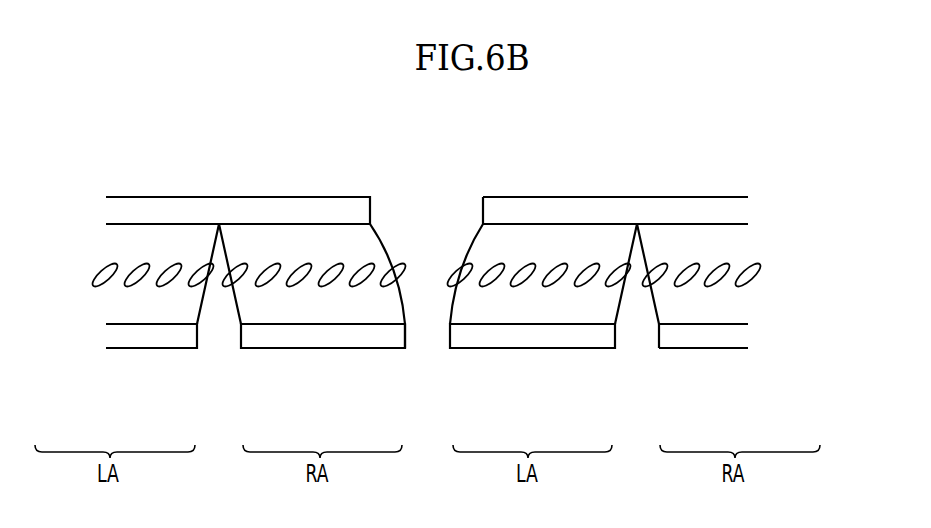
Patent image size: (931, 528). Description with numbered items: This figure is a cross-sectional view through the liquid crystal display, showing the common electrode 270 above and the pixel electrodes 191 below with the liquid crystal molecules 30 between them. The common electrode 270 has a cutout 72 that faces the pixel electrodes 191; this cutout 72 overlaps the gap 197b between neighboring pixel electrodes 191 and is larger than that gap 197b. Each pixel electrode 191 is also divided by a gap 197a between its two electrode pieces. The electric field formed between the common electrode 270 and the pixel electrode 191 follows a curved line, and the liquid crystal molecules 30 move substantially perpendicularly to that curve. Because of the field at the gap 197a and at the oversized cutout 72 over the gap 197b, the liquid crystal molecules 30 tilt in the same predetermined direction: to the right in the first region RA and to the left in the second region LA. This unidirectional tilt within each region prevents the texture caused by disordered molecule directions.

The common electrode 270 is at (302, 208).
The cutout 72 is at (372, 206).
The liquid crystal molecules 30 is at (403, 268).
The pixel electrode 191 is at (362, 337).
The gap 197a is at (198, 335).
The gap 197b is at (405, 335).